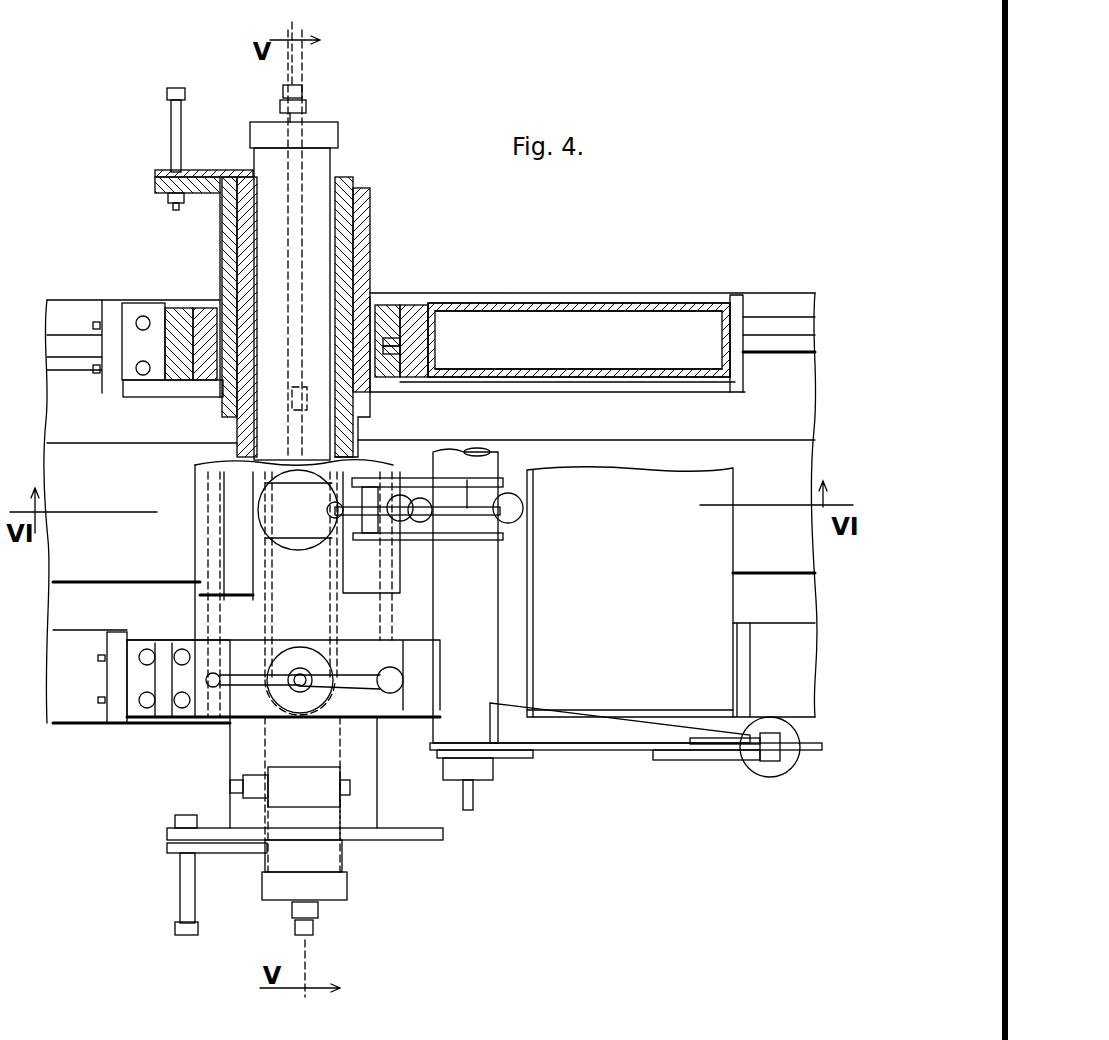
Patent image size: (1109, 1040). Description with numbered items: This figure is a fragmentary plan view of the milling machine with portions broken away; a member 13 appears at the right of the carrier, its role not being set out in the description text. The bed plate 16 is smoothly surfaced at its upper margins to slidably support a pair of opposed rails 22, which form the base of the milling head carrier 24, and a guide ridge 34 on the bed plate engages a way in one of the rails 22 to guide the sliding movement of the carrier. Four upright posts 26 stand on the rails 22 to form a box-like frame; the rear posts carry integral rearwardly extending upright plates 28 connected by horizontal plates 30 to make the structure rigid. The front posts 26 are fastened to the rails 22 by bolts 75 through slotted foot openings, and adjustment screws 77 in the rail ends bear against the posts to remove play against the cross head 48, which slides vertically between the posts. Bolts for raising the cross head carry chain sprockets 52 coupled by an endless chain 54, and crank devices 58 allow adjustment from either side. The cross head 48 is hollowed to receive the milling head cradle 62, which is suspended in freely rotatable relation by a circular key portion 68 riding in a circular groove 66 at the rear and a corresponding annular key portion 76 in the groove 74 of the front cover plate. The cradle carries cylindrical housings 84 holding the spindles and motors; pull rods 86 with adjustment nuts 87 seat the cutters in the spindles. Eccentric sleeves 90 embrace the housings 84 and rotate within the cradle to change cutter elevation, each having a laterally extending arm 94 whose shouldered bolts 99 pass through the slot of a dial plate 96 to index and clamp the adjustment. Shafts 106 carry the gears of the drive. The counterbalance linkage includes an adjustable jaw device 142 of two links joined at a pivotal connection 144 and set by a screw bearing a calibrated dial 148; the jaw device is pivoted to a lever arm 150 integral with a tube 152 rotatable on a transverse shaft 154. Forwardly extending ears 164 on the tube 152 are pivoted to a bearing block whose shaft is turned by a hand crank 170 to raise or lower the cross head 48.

The bracket 13 is at (722, 305).
The bed plate 16 is at (752, 300).
The rails 22 is at (550, 295).
The milling head carrier 24 is at (608, 303).
The upright posts 26 is at (200, 300).
The upright plates 28 is at (500, 372).
The horizontal plates 30 is at (630, 592).
The guide ridge 34 is at (785, 335).
The cross head 48 is at (390, 305).
The chain sprockets 52 is at (300, 655).
The endless chain 54 is at (302, 715).
The crank devices 58 is at (360, 675).
The milling head cradle 62 is at (362, 223).
The circular groove 66 is at (395, 343).
The circular key portion 68 is at (395, 350).
The circular groove 74 is at (180, 378).
The bolts 75 is at (143, 360).
The annular key portion 76 is at (207, 380).
The adjustment screws 77 is at (95, 370).
The cylindrical housings 84 is at (338, 166).
The pull rods 86 is at (303, 92).
The adjustment nuts 87 is at (306, 106).
The eccentric sleeves 90 is at (347, 203).
The laterally extending arm 94 is at (160, 172).
The dial plate 96 is at (158, 188).
The shouldered bolts 99 is at (167, 94).
The shafts 106 is at (230, 788).
The adjustable jaw device 142 is at (725, 768).
The pivotal connection 144 is at (685, 760).
The calibrated dial 148 is at (785, 770).
The lever arm 150 is at (625, 750).
The tube 152 is at (465, 596).
The shaft 154 is at (478, 780).
The ears 164 is at (410, 478).
The hand crank 170 is at (467, 508).